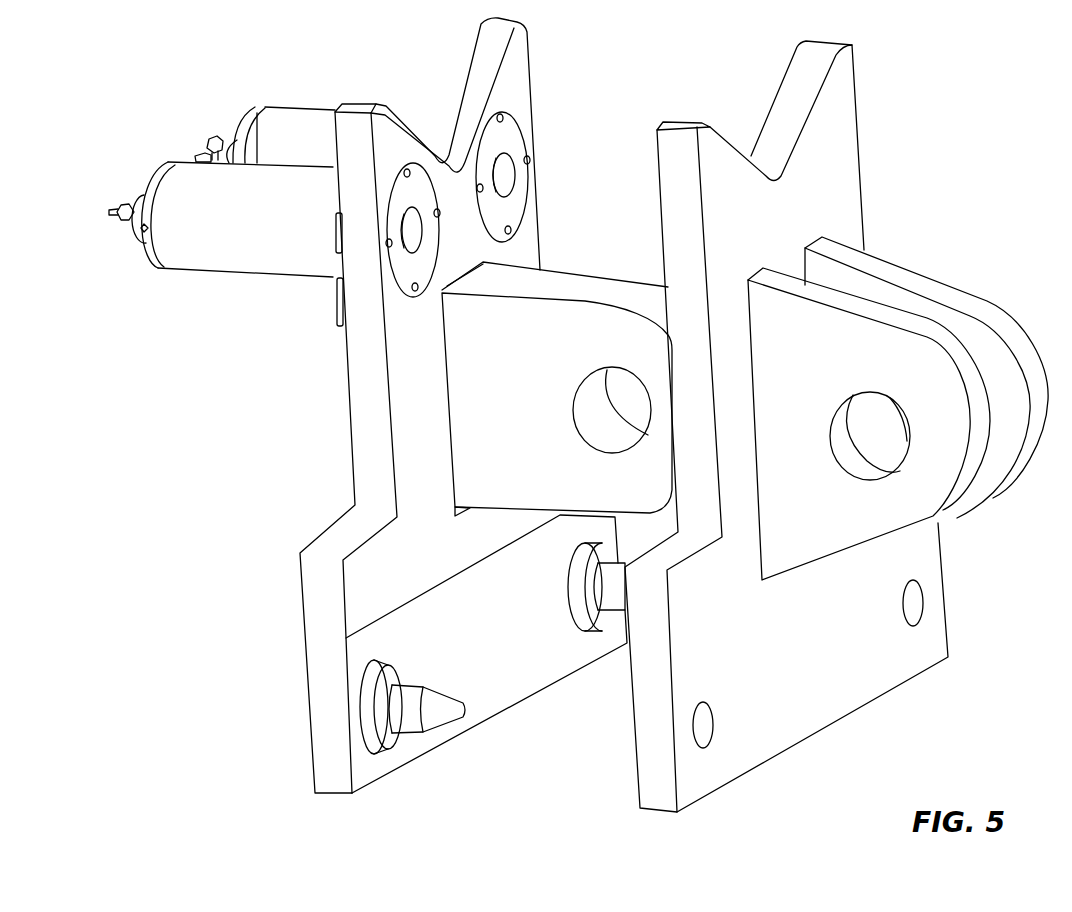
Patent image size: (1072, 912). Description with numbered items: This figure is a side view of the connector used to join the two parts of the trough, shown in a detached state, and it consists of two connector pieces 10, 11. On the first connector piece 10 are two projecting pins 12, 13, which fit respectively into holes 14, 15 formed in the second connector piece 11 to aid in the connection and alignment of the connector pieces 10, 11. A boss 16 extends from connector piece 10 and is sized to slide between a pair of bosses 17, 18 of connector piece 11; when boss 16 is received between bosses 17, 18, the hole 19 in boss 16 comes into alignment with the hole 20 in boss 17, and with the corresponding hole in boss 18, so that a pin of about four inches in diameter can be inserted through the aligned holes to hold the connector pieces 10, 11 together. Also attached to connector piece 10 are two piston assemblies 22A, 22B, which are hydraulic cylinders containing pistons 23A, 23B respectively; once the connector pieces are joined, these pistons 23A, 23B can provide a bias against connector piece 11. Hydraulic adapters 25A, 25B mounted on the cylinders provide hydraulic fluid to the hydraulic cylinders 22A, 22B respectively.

The connector piece 10 is at (500, 636).
The connector piece 11 is at (824, 643).
The pin 12 is at (413, 725).
The pin 13 is at (613, 597).
The hole 14 is at (708, 738).
The hole 15 is at (910, 620).
The boss 16 is at (502, 418).
The boss 17 is at (814, 390).
The boss 18 is at (973, 340).
The hole 19 is at (618, 397).
The hole 20 is at (890, 450).
The piston assembly 22A is at (270, 241).
The piston assembly 22B is at (310, 150).
The piston 23A is at (405, 236).
The piston 23B is at (505, 167).
The hydraulic adapter 25A is at (119, 210).
The hydraulic adapter 25B is at (213, 137).